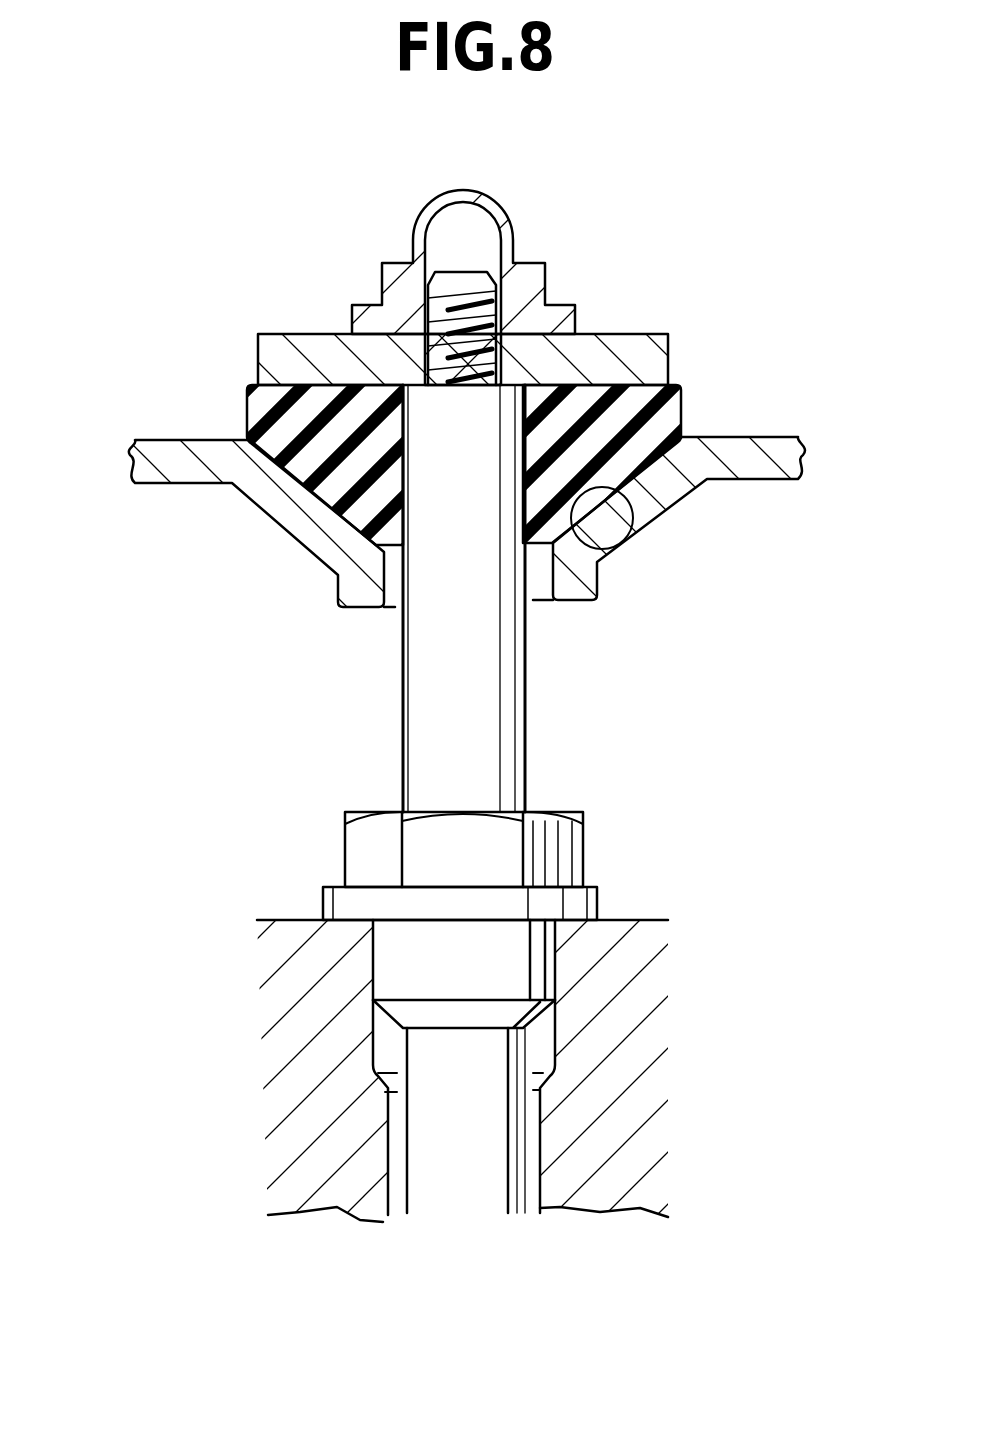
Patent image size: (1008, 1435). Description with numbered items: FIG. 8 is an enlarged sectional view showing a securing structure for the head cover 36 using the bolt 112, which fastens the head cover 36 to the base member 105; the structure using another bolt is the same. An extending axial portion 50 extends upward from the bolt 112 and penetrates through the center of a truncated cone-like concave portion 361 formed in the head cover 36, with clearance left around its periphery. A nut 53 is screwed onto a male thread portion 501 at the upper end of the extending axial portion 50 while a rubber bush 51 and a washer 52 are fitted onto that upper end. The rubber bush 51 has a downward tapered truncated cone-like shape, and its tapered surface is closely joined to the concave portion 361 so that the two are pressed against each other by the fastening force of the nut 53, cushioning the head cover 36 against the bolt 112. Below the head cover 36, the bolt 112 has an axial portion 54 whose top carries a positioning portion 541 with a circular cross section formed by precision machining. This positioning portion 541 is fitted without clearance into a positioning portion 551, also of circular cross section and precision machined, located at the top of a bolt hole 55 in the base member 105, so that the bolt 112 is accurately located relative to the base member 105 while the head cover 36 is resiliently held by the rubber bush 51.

The head cover 36 is at (750, 413).
The truncated cone-like concave portion 361 is at (630, 515).
The rubber bush 51 is at (255, 397).
The washer 52 is at (312, 355).
The nut 53 is at (527, 300).
The extending axial portion 50 is at (388, 707).
The male thread portion 501 is at (463, 287).
The bolt 112 is at (598, 842).
The base member 105 is at (620, 945).
The axial portion 54 is at (472, 1118).
The positioning portion 541 is at (373, 940).
The positioning portion 551 is at (377, 1040).
The bolt hole 55 is at (390, 1157).